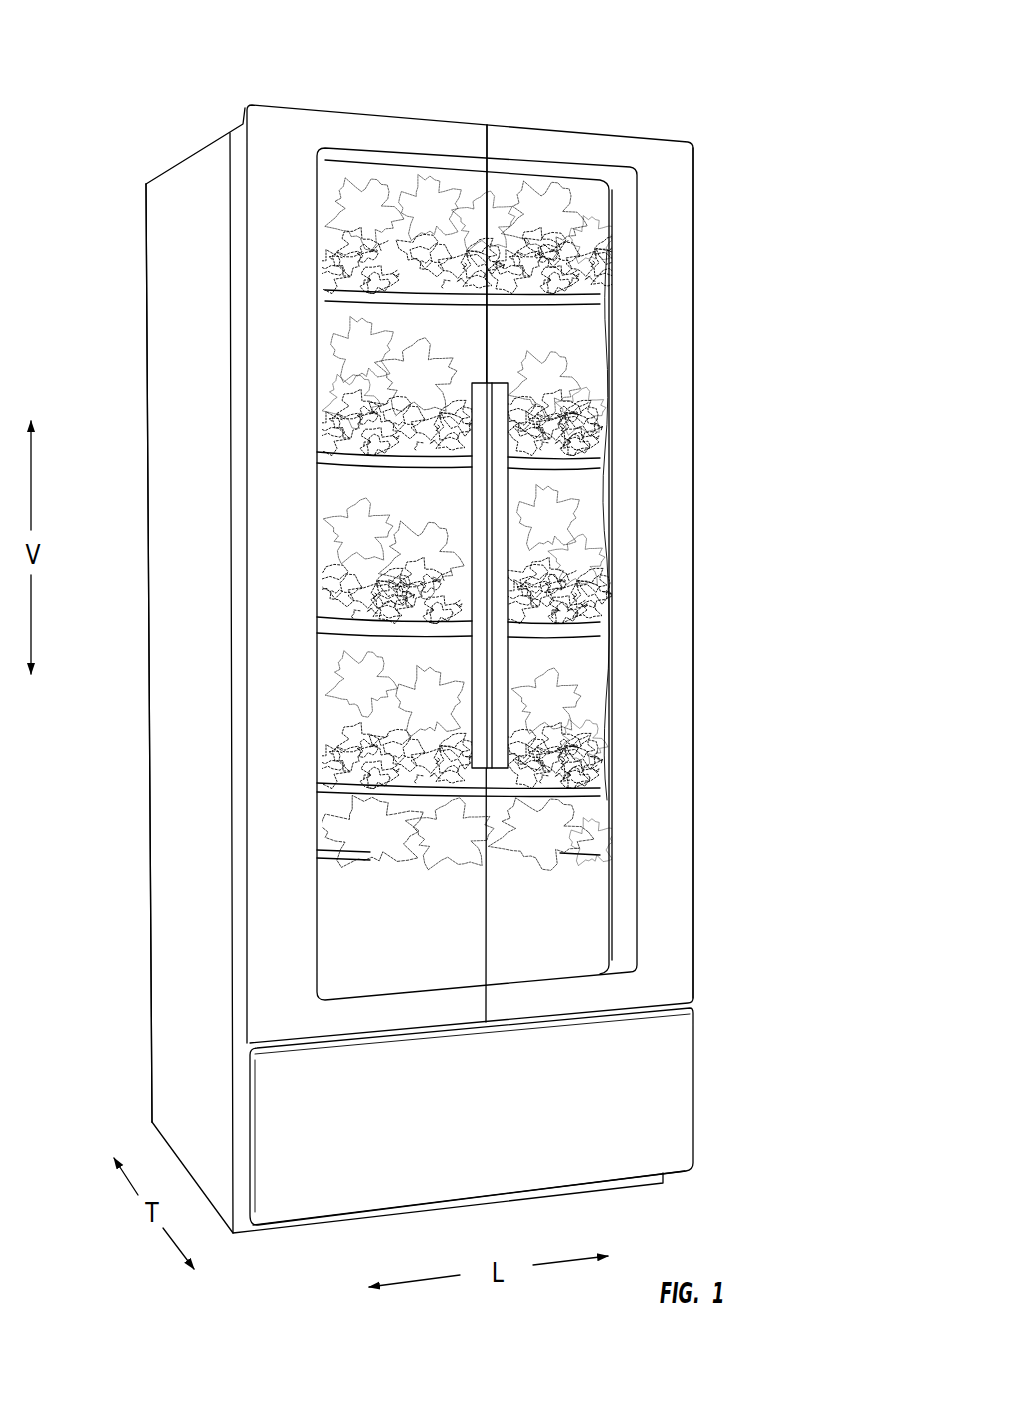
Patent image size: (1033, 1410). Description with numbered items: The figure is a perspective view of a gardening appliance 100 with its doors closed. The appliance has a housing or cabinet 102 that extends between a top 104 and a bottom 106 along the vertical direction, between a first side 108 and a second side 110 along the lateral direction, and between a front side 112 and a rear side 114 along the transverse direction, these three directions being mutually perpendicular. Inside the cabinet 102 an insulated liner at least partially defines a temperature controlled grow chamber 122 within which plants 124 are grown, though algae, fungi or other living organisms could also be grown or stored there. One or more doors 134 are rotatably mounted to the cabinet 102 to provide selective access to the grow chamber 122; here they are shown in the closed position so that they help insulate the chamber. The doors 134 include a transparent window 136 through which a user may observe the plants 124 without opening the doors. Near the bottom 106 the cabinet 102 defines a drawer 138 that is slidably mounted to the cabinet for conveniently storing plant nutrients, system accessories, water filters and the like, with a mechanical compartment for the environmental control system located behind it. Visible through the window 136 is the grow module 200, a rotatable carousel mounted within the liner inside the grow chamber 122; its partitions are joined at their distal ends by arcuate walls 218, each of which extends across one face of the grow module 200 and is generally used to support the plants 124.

The gardening appliance 100 is at (795, 79).
The cabinet 102 is at (172, 470).
The top 104 is at (204, 146).
The bottom 106 is at (225, 1240).
The first side 108 is at (170, 1011).
The second side 110 is at (698, 1052).
The front side 112 is at (515, 1160).
The rear side 114 is at (147, 692).
The grow chamber 122 is at (567, 478).
The plants 124 is at (597, 222).
The doors 134 is at (541, 143).
The transparent window 136 is at (355, 215).
The drawer 138 is at (653, 1120).
The grow module 200 is at (548, 655).
The arcuate wall 218 is at (350, 326).